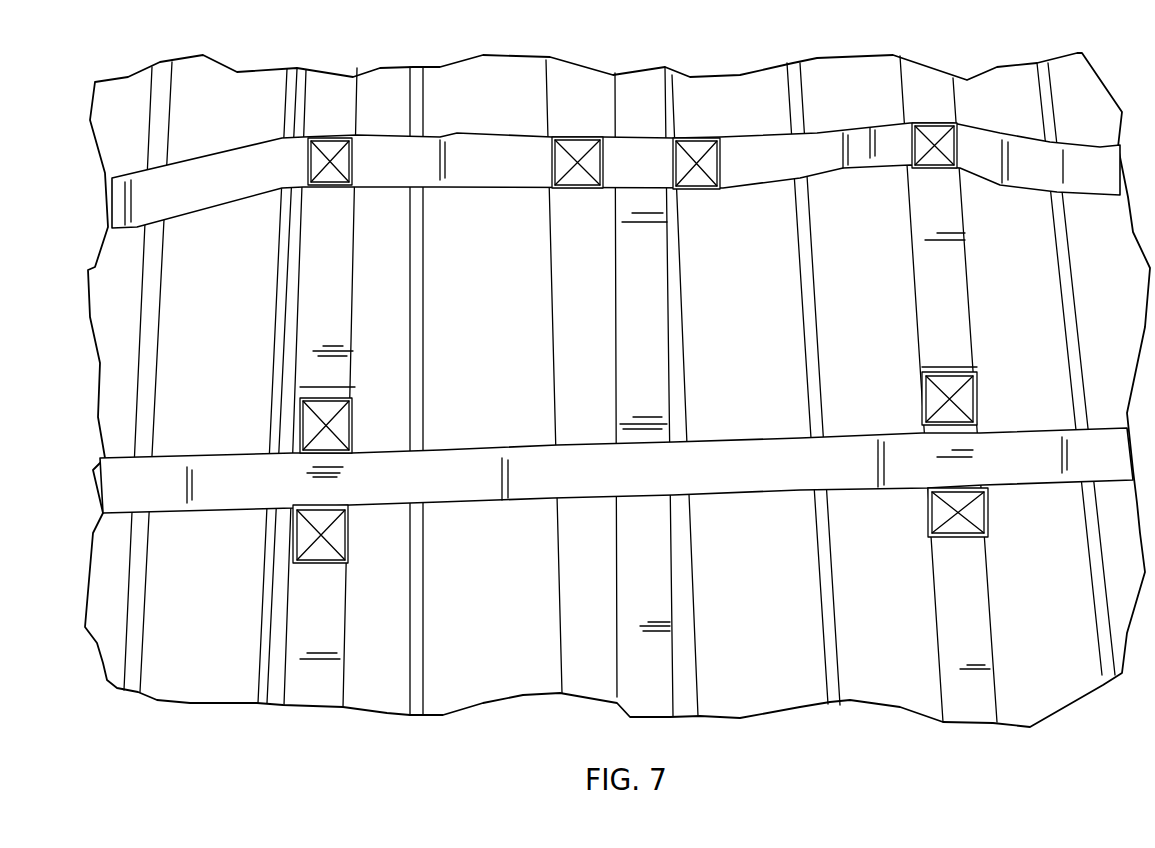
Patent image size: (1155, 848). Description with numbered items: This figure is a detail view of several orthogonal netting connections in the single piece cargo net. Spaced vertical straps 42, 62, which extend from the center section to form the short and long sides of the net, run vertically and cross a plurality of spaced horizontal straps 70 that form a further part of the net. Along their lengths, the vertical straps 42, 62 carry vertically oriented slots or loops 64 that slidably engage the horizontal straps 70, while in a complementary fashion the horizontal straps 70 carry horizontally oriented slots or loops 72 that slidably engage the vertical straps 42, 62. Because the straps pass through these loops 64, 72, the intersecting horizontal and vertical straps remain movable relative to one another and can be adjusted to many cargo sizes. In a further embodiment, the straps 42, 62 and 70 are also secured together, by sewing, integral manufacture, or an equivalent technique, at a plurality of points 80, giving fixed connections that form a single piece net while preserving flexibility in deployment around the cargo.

The points 80 is at (330, 172).
The horizontally oriented slots or loops 72 is at (638, 170).
The spaced horizontal straps 70 is at (476, 490).
The vertically oriented slots or loops 64 is at (330, 477).
The spaced vertical straps 62 is at (595, 378).
The spaced vertical straps 42 is at (643, 413).